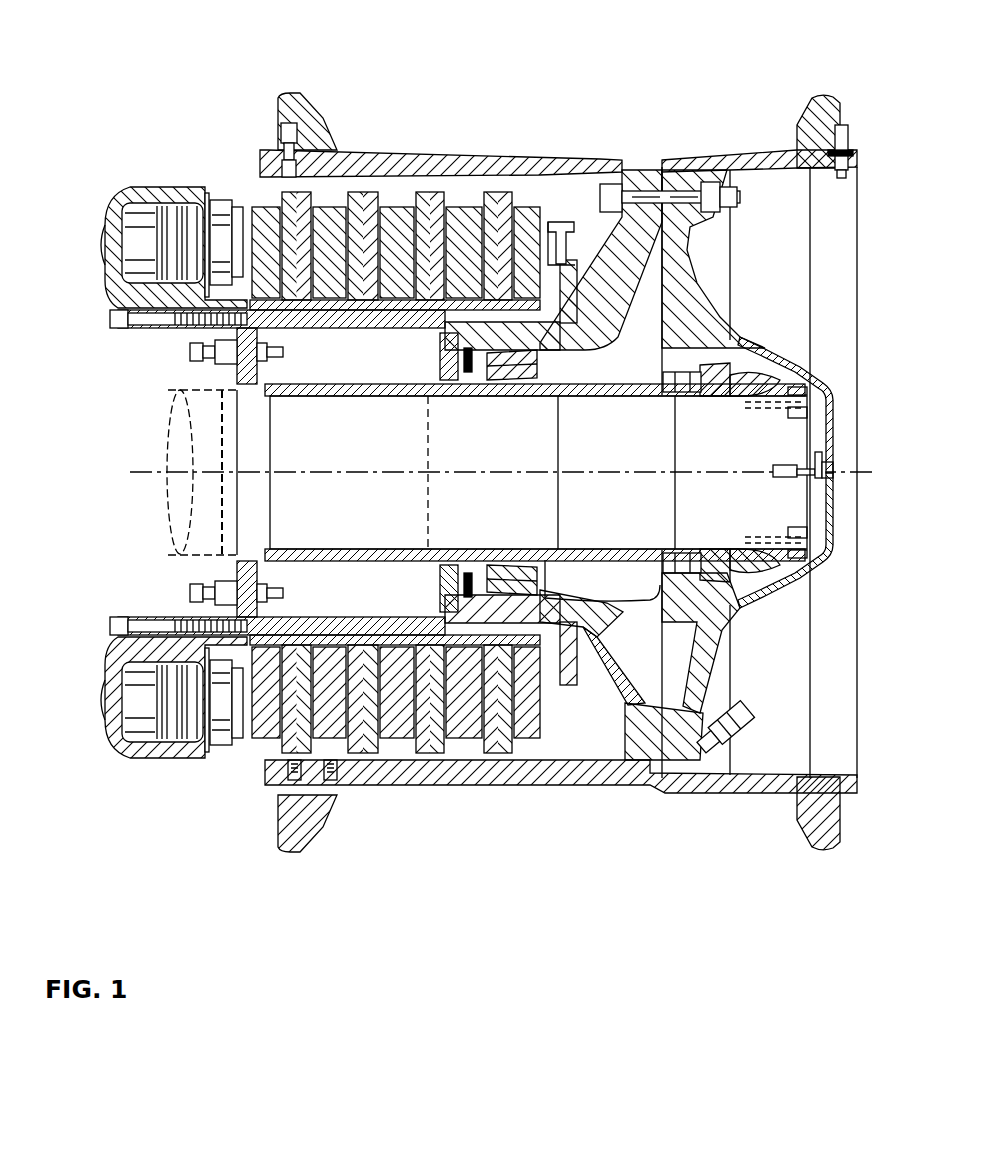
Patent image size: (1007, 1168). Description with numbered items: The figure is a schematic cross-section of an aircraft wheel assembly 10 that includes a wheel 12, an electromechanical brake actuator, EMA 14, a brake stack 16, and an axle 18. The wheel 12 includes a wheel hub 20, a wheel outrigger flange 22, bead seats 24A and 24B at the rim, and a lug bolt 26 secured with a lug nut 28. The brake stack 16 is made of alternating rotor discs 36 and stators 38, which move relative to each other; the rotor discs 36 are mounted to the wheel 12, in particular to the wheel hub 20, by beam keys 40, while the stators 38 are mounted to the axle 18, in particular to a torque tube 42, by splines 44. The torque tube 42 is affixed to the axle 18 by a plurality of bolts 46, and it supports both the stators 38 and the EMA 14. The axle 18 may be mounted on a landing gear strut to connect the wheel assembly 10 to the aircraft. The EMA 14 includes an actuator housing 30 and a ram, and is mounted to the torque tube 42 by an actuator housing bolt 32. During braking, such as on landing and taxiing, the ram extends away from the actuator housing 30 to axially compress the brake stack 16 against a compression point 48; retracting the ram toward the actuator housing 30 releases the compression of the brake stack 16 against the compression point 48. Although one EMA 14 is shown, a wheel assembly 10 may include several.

The aircraft wheel assembly 10 is at (678, 48).
The wheel 12 is at (607, 137).
The EMA 14 is at (108, 187).
The brake stack 16 is at (242, 768).
The axle 18 is at (483, 446).
The wheel hub 20 is at (476, 160).
The wheel outrigger flange 22 is at (727, 152).
The bead seat 24A is at (798, 122).
The bead seat 24B is at (323, 118).
The lug bolt 26 is at (677, 192).
The lug nut 28 is at (740, 201).
The actuator housing 30 is at (104, 250).
The actuator housing bolt 32 is at (120, 326).
The rotor discs 36 is at (360, 750).
The stators 38 is at (393, 748).
The beam keys 40 is at (522, 768).
The torque tube 42 is at (344, 322).
The splines 44 is at (360, 640).
The bolts 46 is at (212, 592).
The compression point 48 is at (550, 224).